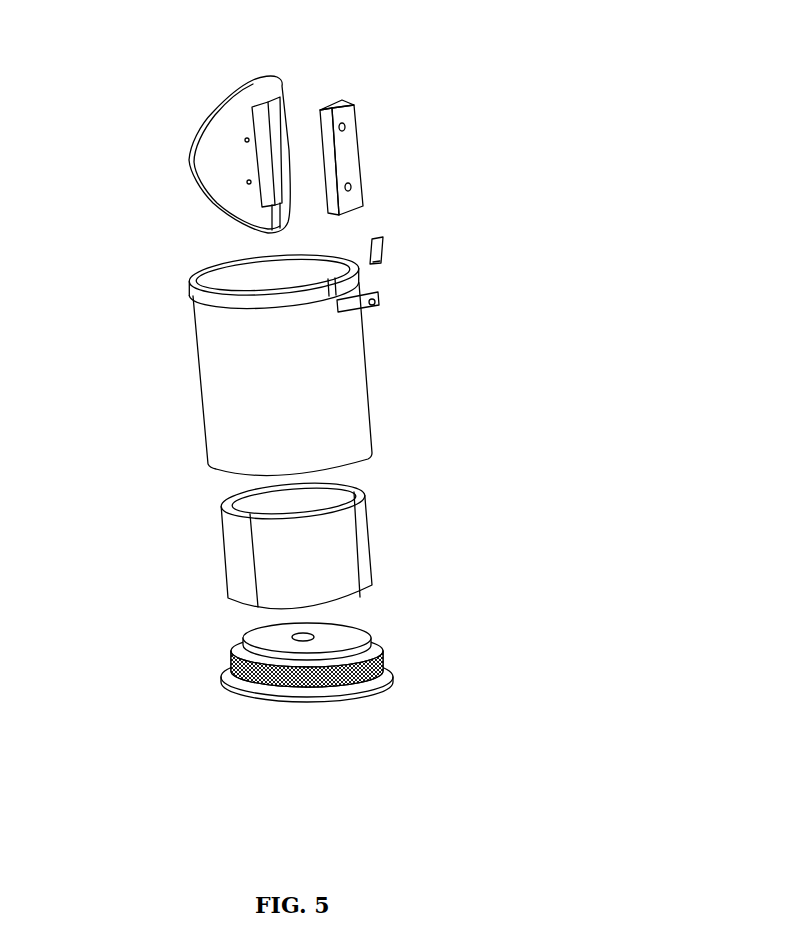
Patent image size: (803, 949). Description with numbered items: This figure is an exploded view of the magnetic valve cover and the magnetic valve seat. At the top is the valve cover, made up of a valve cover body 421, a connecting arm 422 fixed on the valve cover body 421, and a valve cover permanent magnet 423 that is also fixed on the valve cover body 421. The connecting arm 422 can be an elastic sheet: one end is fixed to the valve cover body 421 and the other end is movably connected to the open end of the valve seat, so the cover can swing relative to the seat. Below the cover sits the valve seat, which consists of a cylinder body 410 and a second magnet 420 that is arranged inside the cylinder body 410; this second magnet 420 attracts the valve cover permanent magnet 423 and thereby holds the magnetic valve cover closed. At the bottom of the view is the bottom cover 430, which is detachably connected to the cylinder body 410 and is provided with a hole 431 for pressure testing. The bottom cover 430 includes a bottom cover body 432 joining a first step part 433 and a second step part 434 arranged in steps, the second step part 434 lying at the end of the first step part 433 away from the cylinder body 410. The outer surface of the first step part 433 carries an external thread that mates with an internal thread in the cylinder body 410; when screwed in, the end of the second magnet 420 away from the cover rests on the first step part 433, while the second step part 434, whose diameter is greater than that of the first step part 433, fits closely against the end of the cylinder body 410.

The cylinder body 410 is at (222, 433).
The second magnet 420 is at (352, 543).
The valve cover body 421 is at (255, 80).
The connecting arm 422 is at (383, 237).
The valve cover permanent magnet 423 is at (347, 150).
The bottom cover 430 is at (305, 681).
The hole 431 is at (295, 635).
The bottom cover body 432 is at (272, 683).
The first step part 433 is at (240, 650).
The second step part 434 is at (343, 678).